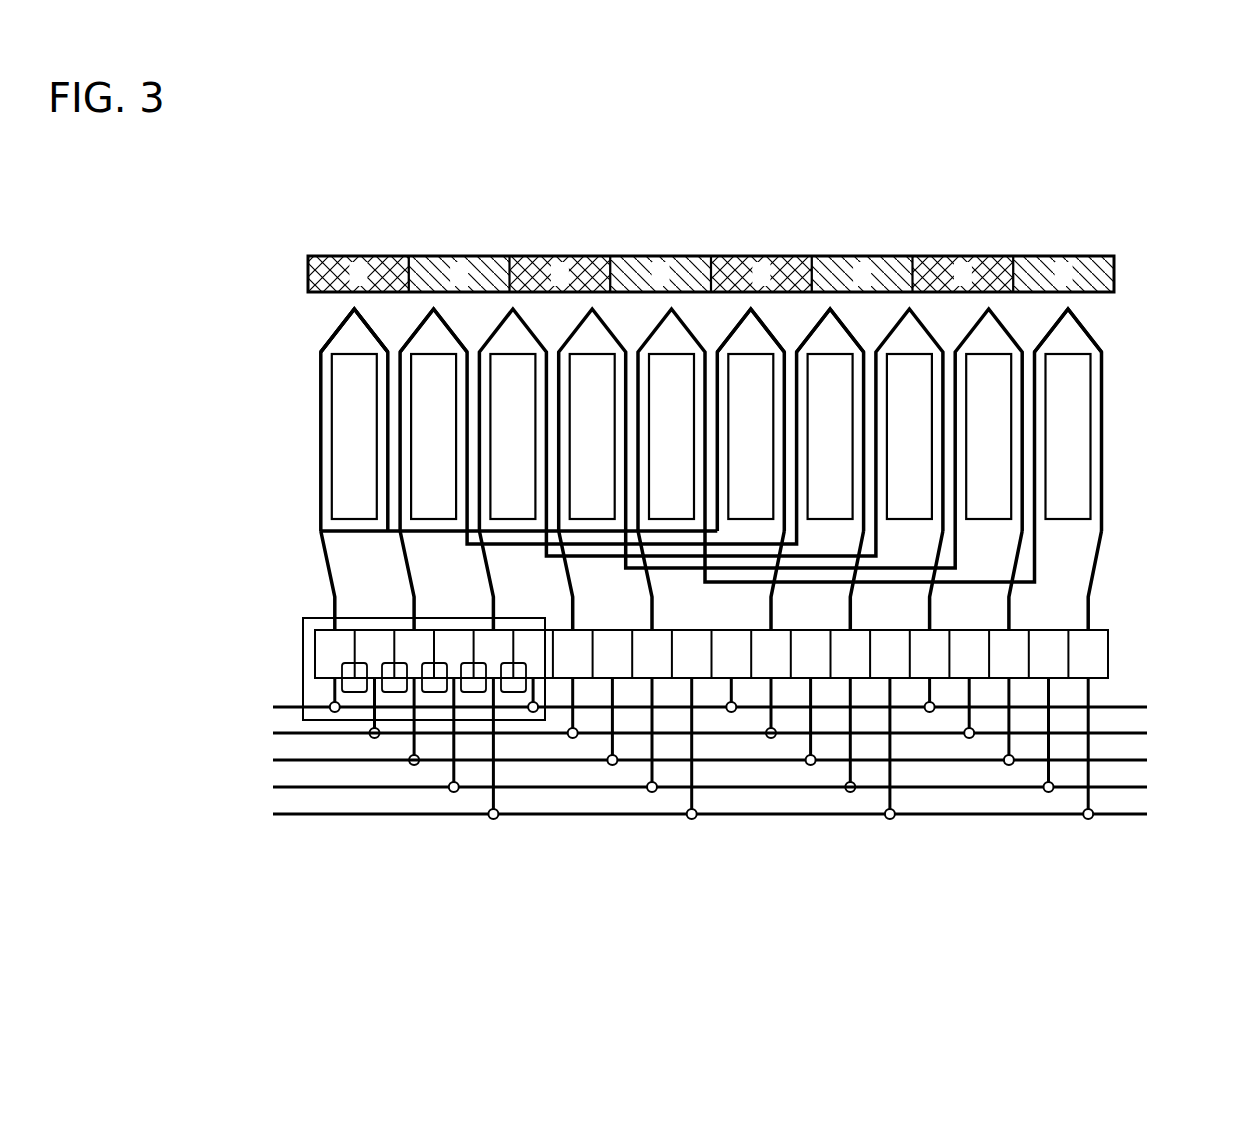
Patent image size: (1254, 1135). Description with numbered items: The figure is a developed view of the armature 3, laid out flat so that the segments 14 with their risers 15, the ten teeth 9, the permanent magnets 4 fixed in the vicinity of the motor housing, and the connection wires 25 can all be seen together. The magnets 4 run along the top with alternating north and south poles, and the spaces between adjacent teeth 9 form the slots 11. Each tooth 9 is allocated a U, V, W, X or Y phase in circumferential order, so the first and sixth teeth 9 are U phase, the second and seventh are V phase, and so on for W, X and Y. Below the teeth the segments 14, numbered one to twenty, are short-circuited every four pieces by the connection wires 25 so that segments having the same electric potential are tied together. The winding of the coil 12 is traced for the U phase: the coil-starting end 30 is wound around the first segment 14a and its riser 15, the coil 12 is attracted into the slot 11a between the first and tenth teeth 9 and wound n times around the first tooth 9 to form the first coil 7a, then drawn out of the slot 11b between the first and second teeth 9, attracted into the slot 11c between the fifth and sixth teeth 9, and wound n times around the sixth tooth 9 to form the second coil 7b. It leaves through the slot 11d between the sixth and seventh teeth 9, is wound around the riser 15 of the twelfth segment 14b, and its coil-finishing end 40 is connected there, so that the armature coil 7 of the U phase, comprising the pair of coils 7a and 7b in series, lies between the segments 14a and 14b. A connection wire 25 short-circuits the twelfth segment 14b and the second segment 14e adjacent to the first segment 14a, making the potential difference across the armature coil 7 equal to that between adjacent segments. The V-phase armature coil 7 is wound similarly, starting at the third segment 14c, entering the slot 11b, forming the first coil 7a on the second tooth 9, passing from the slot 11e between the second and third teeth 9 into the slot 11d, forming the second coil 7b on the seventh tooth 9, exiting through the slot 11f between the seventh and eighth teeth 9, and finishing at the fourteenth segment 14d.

The armature 3 is at (1152, 320).
The permanent magnets 4 is at (346, 256).
The armature coil 7 is at (650, 325).
The first coil 7a is at (347, 318).
The second coil 7b is at (770, 333).
The teeth 9 is at (1091, 398).
The slots 11 is at (1030, 358).
The slot 11a is at (318, 363).
The slot 11b is at (394, 354).
The slot 11c is at (712, 358).
The slot 11d is at (792, 358).
The slot 11e is at (473, 354).
The slot 11f is at (870, 358).
The coil 12 is at (332, 335).
The segments 14 is at (1109, 655).
The risers 15 is at (785, 650).
The first segment 14a is at (303, 653).
The twelfth segment 14b is at (763, 683).
The third segment 14c is at (411, 693).
The fourteenth segment 14d is at (840, 683).
The second segment 14e is at (368, 693).
The connection wires 25 is at (1130, 733).
The coil-starting end 30 is at (412, 602).
The coil-finishing end 40 is at (850, 615).